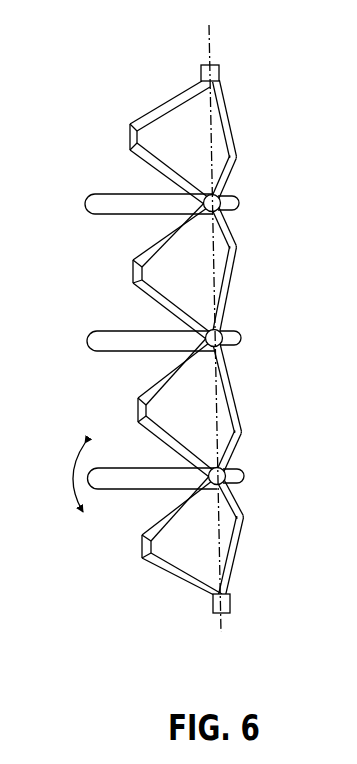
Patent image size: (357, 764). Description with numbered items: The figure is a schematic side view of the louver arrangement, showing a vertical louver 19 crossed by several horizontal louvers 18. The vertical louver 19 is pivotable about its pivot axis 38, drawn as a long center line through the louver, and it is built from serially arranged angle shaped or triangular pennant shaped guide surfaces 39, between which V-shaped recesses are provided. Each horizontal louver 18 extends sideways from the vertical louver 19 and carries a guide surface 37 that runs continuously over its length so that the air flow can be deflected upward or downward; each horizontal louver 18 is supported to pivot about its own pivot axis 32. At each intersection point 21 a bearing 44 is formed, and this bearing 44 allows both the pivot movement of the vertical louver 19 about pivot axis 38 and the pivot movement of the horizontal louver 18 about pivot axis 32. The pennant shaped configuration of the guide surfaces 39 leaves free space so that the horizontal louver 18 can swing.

The horizontal louver 18 is at (125, 384).
The vertical louver 19 is at (232, 346).
The intersection point 21 is at (240, 312).
The pivot axis 32 is at (243, 482).
The guide surface 37 is at (127, 490).
The pivot axis 38 is at (210, 53).
The pennant shaped guide surface 39 is at (192, 558).
The bearing 44 is at (228, 468).